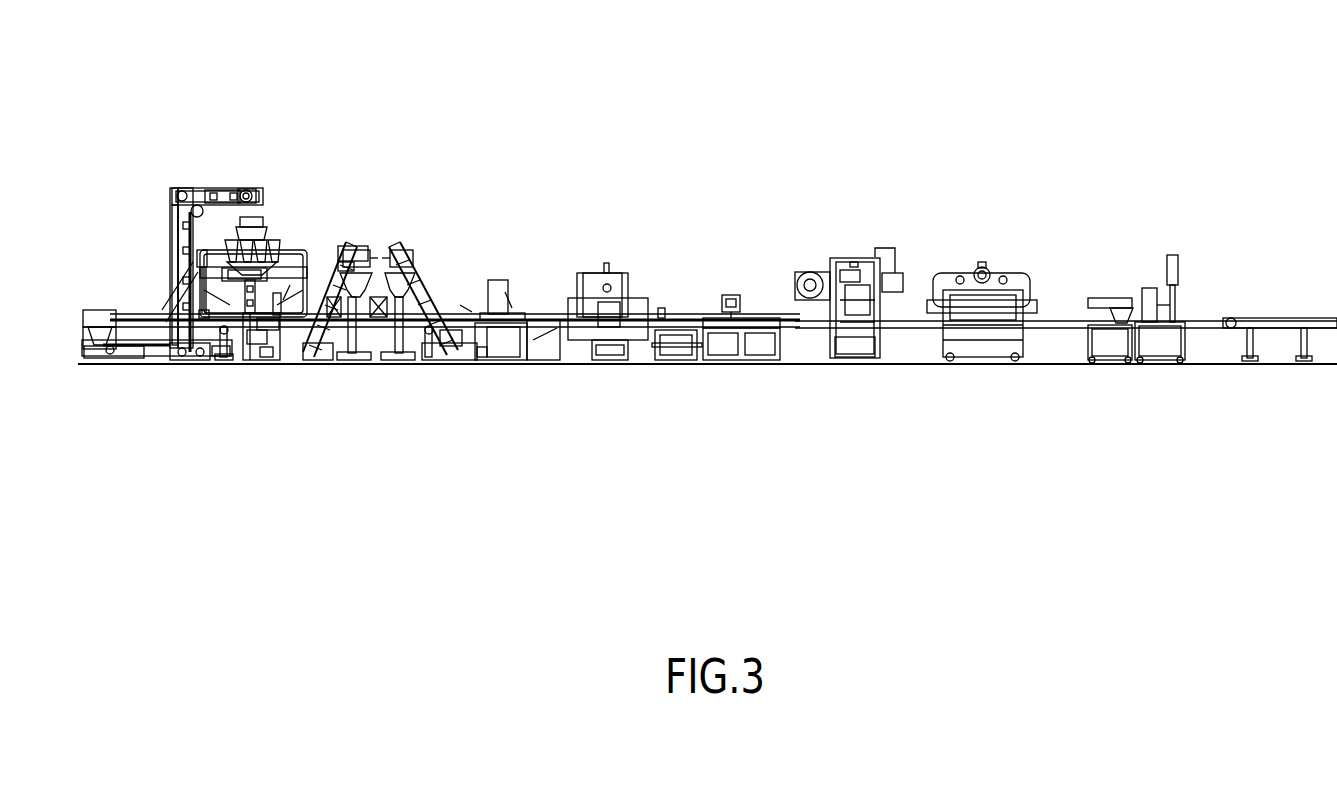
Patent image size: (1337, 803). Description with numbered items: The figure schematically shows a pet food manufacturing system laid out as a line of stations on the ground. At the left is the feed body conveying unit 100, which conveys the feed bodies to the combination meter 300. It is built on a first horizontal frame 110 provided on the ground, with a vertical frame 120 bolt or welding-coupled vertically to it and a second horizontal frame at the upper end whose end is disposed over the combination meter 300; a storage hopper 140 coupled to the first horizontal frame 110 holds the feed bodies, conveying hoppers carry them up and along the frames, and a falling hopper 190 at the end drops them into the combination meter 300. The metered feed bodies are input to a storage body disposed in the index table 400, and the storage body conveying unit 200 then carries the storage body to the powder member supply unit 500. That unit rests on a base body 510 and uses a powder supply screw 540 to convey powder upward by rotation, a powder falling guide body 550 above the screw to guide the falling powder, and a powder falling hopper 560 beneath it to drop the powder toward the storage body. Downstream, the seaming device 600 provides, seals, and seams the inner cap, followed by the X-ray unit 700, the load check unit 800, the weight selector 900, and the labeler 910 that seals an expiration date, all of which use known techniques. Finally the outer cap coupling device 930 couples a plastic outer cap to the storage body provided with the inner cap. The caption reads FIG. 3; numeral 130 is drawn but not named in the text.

The feed body conveying unit 100 is at (160, 158).
The first horizontal frame 110 is at (163, 367).
The vertical frame 120 is at (175, 233).
The top transfer frame 130 is at (226, 188).
The storage hopper 140 is at (93, 307).
The falling hopper 190 is at (268, 190).
The storage body conveying unit 200 is at (233, 367).
The combination meter 300 is at (272, 232).
The index table 400 is at (260, 367).
The powder member supply unit 500 is at (343, 462).
The base body 510 is at (313, 367).
The powder supply screw 540 is at (325, 265).
The powder falling guide body 550 is at (358, 256).
The powder falling hopper 560 is at (380, 367).
The seaming device 600 is at (500, 255).
The X-ray unit 700 is at (624, 248).
The load check unit 800 is at (733, 290).
The weight selector 900 is at (861, 232).
The labeler 910 is at (1001, 254).
The outer cap coupling device 930 is at (1137, 264).